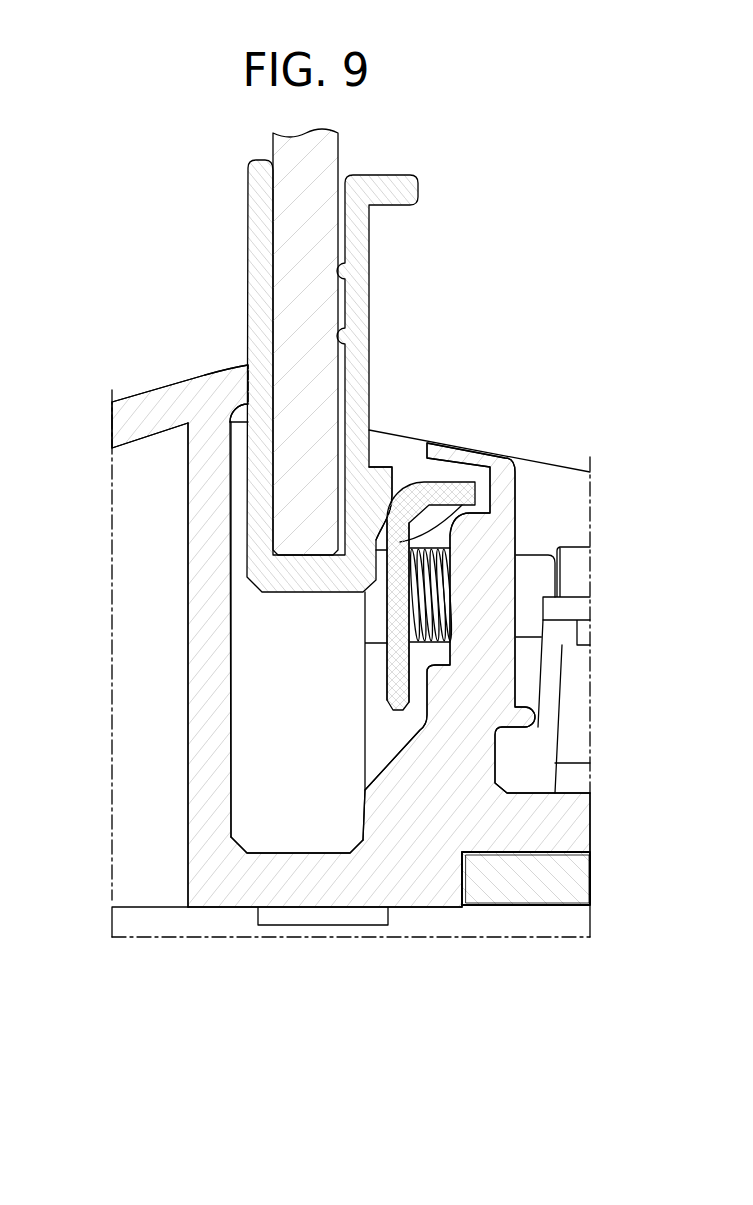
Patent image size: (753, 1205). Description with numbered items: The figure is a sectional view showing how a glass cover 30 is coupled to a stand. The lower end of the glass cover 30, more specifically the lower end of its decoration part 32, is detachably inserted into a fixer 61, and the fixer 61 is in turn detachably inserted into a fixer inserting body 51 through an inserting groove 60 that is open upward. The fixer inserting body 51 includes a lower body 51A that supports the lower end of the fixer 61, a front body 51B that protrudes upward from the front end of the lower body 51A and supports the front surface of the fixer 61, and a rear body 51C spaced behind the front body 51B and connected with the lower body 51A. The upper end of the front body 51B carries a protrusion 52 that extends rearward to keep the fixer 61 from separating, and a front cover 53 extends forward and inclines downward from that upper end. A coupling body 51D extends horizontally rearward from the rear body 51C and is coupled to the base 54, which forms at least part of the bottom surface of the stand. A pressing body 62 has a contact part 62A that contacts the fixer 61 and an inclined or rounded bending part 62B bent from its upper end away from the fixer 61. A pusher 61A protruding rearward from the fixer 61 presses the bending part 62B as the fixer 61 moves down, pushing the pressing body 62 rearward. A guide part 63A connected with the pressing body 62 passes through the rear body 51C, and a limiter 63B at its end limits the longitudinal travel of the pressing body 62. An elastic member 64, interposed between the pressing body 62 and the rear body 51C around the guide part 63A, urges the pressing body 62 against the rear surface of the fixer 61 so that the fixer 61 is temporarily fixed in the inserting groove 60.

The glass cover 30 is at (245, 342).
The decoration part 32 is at (295, 280).
The fixer inserting body 51 is at (443, 1018).
The lower body 51A is at (297, 883).
The front body 51B is at (202, 778).
The rear body 51C is at (478, 668).
The coupling body 51D is at (577, 824).
The protrusion 52 is at (228, 370).
The front cover 53 is at (138, 413).
The base 54 is at (530, 887).
The inserting groove 60 is at (276, 657).
The fixer 61 is at (250, 208).
The pusher 61A is at (387, 468).
The pressing body 62 is at (449, 523).
The contact part 62A is at (473, 497).
The bending part 62B is at (422, 492).
The guide part 63A is at (535, 567).
The limiter 63B is at (575, 555).
The elastic member 64 is at (433, 589).